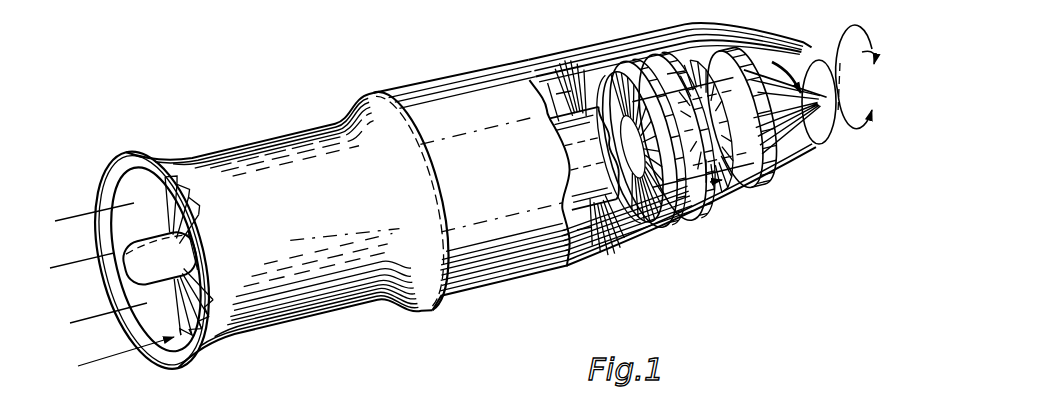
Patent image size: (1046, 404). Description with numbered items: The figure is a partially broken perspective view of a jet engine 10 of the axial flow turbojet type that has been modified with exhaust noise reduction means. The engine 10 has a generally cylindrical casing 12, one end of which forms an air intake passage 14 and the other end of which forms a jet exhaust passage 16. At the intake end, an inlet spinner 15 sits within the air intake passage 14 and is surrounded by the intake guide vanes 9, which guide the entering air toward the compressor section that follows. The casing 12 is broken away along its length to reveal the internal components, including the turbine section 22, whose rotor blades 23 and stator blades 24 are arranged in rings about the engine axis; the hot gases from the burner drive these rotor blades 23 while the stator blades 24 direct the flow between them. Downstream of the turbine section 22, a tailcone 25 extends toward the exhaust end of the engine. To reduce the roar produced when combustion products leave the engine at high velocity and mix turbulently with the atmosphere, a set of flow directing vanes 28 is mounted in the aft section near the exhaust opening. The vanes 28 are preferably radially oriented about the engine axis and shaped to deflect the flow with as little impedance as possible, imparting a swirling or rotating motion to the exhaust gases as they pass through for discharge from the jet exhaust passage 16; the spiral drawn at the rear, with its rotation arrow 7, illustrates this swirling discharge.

The vortex rotation arrow 7 is at (872, 45).
The intake guide vanes 9 is at (192, 350).
The jet engine 10 is at (432, 308).
The casing 12 is at (334, 205).
The air intake passage 14 is at (148, 318).
The inlet spinner 15 is at (146, 250).
The jet exhaust passage 16 is at (820, 140).
The turbine section 22 is at (673, 229).
The rotor blades 23 is at (612, 225).
The stator blades 24 is at (655, 228).
The tailcone 25 is at (775, 60).
The flow directing vanes 28 is at (716, 190).